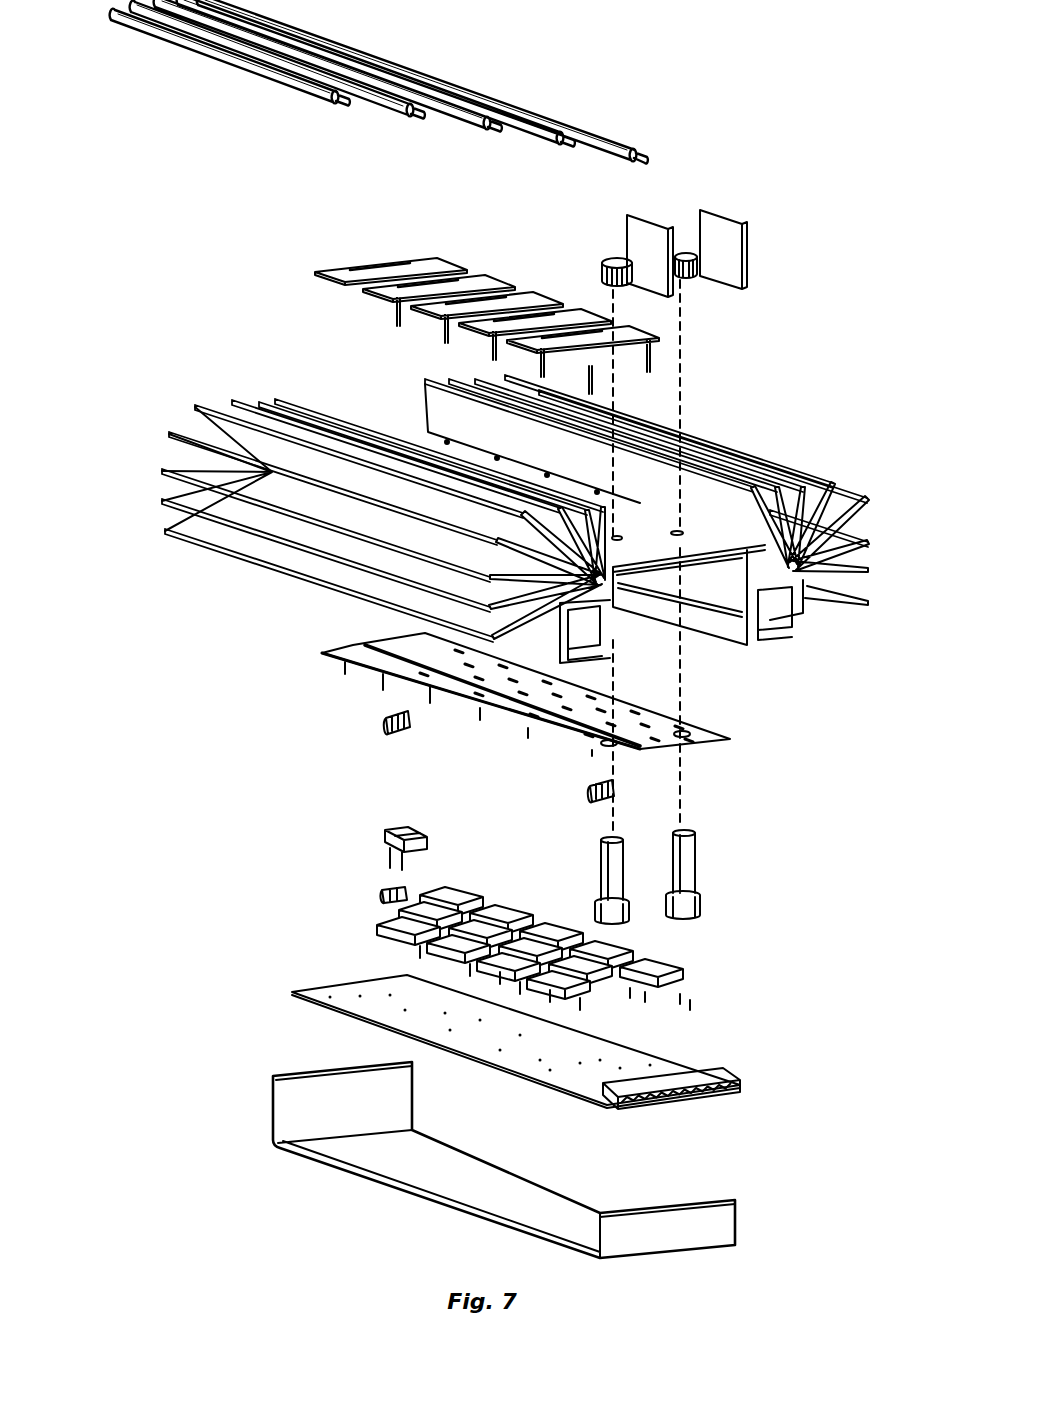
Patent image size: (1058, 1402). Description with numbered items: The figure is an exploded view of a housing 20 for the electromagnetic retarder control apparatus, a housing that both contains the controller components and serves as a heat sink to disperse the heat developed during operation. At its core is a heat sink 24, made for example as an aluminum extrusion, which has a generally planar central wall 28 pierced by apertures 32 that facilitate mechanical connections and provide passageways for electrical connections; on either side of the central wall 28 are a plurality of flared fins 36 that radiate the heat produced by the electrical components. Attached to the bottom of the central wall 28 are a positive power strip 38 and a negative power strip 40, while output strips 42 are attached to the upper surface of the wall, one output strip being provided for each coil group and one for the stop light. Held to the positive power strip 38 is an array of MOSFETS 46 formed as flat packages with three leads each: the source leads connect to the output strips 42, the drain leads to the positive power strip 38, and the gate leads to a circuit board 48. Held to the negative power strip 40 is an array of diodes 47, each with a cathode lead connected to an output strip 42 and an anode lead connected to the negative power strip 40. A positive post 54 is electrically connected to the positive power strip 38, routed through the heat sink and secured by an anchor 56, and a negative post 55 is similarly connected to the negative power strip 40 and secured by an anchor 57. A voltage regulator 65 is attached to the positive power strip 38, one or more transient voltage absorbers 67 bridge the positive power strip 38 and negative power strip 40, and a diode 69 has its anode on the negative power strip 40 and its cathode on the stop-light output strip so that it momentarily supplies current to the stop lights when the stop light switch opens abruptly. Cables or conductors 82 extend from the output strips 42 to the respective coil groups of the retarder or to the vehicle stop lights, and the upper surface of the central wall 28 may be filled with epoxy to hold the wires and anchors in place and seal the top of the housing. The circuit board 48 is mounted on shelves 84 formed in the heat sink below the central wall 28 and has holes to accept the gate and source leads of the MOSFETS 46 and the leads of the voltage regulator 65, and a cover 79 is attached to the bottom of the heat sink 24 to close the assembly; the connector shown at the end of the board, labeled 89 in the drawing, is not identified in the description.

The housing 20 is at (473, 514).
The heat sink 24 is at (473, 514).
The central wall 28 is at (714, 545).
The apertures 32 is at (679, 575).
The fins 36 is at (162, 471).
The positive power strip 38 is at (700, 728).
The negative power strip 40 is at (561, 719).
The output strips 42 is at (337, 262).
The MOSFETS 46 is at (625, 1000).
The diodes 47 is at (555, 1005).
The circuit board 48 is at (556, 1064).
The positive post 54 is at (696, 862).
The negative post 55 is at (601, 848).
The anchor 56 is at (690, 282).
The anchor 57 is at (602, 264).
The voltage regulator 65 is at (397, 831).
The transient voltage absorbers 67 is at (376, 721).
The diode 69 is at (380, 898).
The cover 79 is at (354, 1180).
The cables or conductors 82 is at (492, 92).
The shelves 84 is at (618, 626).
The connector 89 is at (747, 1074).